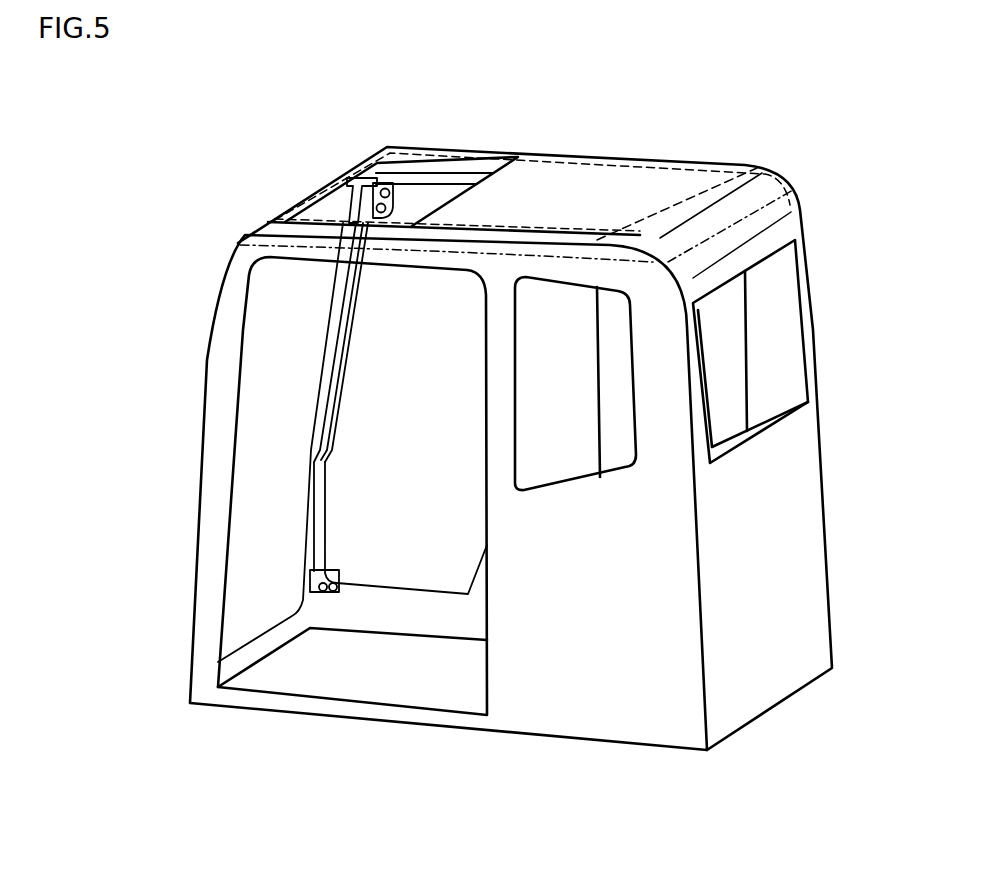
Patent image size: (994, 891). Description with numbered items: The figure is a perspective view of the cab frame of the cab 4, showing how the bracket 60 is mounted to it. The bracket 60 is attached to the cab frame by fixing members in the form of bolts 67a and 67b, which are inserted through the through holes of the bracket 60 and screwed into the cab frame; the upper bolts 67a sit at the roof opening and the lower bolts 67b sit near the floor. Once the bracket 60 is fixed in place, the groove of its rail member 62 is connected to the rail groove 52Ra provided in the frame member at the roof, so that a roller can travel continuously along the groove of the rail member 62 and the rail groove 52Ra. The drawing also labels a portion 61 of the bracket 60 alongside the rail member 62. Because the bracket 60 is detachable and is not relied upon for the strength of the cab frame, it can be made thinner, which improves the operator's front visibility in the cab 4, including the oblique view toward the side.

The cab 4 is at (737, 133).
The rail groove 52Ra is at (457, 180).
The bracket 60 is at (240, 397).
The rail 61 is at (322, 410).
The rail member 62 is at (333, 400).
The bolt 67a is at (371, 181).
The bolt 67b is at (321, 594).